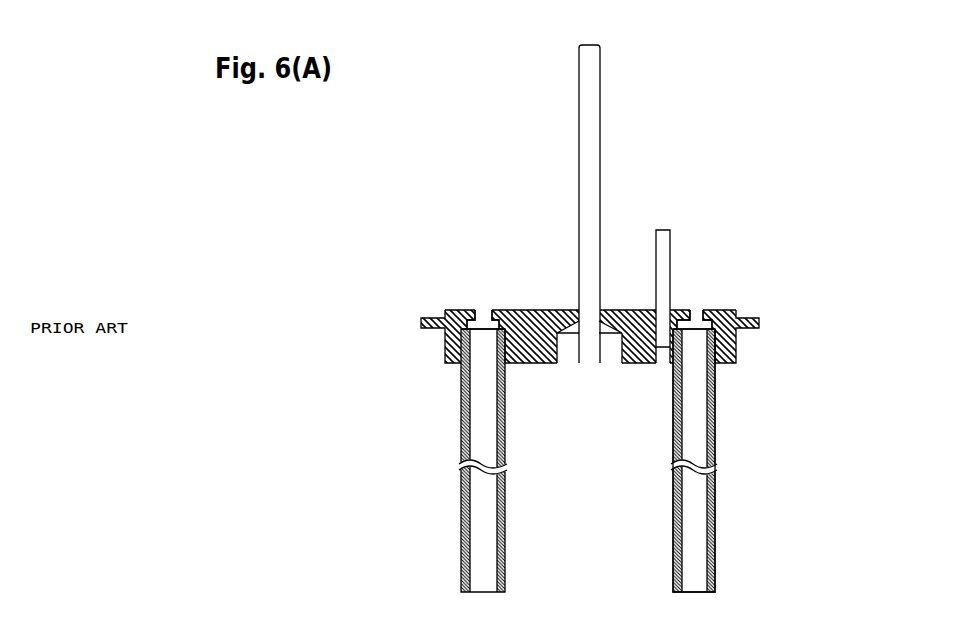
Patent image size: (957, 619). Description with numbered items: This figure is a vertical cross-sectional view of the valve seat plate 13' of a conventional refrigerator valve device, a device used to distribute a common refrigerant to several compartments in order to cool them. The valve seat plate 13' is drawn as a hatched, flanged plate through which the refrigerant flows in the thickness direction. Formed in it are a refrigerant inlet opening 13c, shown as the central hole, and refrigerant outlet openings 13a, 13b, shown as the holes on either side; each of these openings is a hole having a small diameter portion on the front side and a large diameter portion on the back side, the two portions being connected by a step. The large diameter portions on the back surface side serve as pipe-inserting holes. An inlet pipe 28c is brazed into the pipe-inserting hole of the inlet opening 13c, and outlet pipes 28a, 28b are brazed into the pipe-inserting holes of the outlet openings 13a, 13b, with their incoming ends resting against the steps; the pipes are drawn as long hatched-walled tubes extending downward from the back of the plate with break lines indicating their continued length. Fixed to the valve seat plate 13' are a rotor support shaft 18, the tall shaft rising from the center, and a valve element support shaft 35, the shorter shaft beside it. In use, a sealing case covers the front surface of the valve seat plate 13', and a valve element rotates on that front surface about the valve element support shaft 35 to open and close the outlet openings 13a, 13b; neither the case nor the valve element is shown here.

The valve seat plate 13' is at (560, 204).
The refrigerant outlet opening 13a is at (720, 337).
The refrigerant outlet opening 13b is at (483, 336).
The refrigerant inlet opening 13c is at (508, 337).
The rotor support shaft 18 is at (600, 130).
The valve element support shaft 35 is at (665, 230).
The outlet pipe 28a is at (713, 535).
The outlet pipe 28b is at (694, 460).
The inlet pipe 28c is at (462, 540).